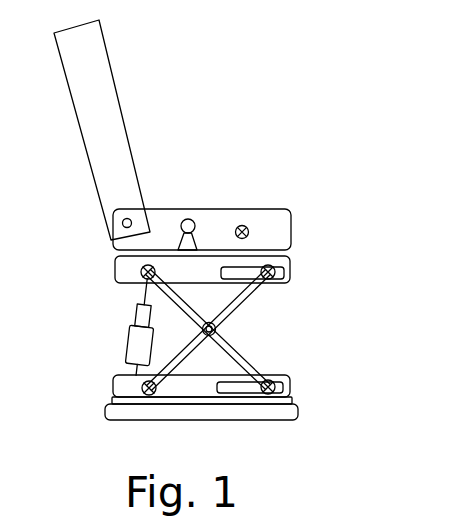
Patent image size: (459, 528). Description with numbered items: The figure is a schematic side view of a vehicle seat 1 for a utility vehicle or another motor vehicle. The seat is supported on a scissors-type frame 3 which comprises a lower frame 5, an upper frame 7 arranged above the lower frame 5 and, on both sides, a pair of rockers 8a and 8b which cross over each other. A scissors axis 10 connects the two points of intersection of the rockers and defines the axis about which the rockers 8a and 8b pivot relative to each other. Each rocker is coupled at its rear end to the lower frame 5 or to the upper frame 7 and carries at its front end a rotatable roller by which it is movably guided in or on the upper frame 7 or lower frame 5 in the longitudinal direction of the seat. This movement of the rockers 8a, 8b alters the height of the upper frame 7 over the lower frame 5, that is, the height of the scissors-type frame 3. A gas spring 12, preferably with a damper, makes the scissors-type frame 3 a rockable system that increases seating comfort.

The vehicle seat 1 is at (223, 242).
The scissors-type frame 3 is at (189, 309).
The lower frame 5 is at (290, 382).
The upper frame 7 is at (130, 270).
The rocker 8a is at (185, 292).
The rocker 8b is at (180, 360).
The scissors axis 10 is at (203, 326).
The gas spring 12 is at (130, 353).